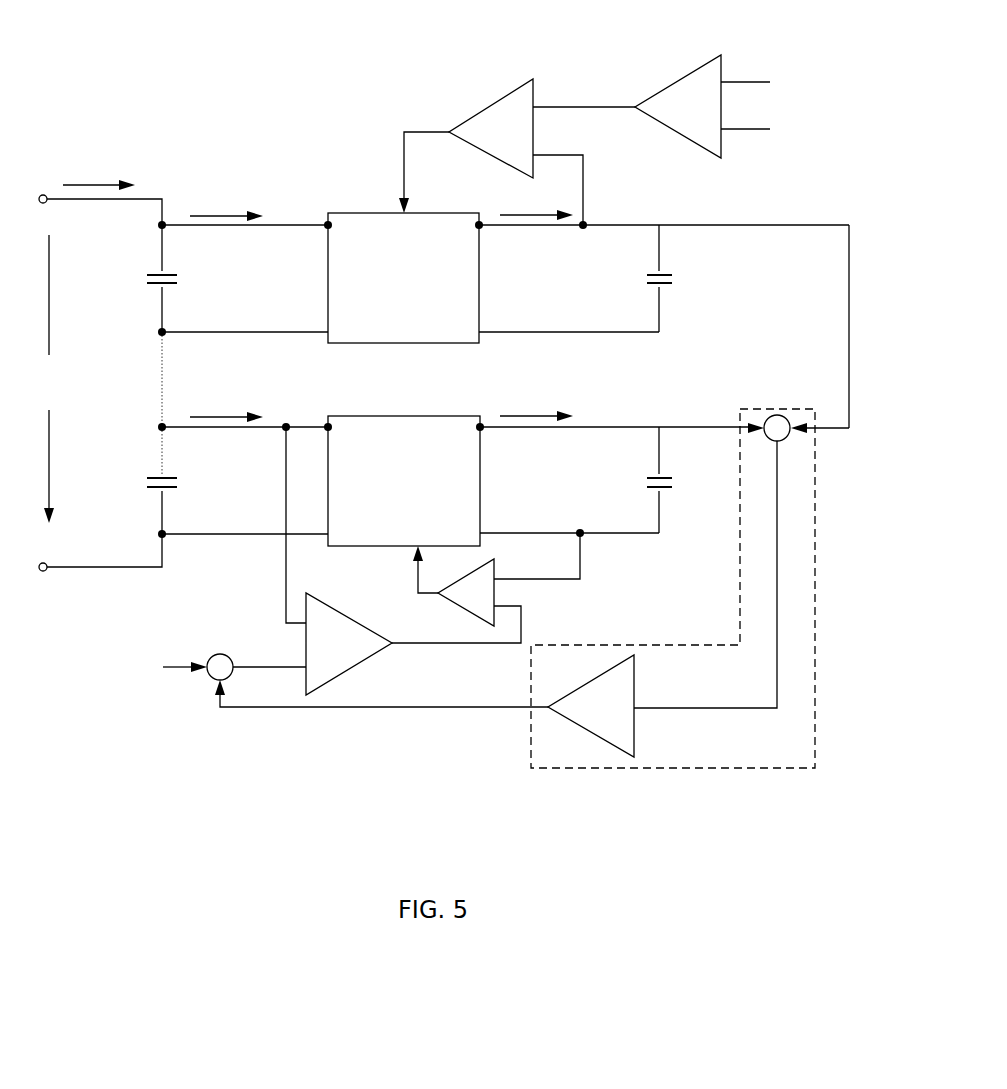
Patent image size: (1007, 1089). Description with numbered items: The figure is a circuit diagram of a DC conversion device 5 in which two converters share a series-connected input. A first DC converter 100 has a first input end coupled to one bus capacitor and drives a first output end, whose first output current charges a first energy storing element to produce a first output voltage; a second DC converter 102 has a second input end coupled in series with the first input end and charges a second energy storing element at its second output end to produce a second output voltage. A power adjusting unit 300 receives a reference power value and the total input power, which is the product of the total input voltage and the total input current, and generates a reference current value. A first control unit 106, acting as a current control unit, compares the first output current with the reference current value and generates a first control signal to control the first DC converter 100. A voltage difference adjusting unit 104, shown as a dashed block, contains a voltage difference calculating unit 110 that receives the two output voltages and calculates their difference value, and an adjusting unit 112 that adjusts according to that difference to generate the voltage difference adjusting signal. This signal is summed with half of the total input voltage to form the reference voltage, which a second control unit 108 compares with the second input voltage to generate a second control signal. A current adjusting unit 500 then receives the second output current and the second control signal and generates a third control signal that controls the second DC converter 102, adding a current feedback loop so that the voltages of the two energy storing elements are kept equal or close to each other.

The DC conversion device 5 is at (167, 47).
The first DC converter 100 is at (347, 213).
The second DC converter 102 is at (347, 416).
The voltage difference adjusting unit 104 is at (663, 603).
The first control unit 106 is at (488, 105).
The second control unit 108 is at (365, 658).
The voltage difference calculating unit 110 is at (793, 437).
The adjusting unit 112 is at (634, 732).
The power adjusting unit 300 is at (677, 80).
The current adjusting unit 500 is at (497, 565).